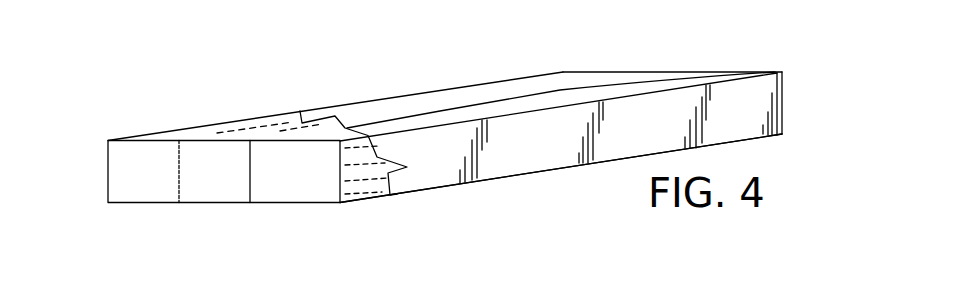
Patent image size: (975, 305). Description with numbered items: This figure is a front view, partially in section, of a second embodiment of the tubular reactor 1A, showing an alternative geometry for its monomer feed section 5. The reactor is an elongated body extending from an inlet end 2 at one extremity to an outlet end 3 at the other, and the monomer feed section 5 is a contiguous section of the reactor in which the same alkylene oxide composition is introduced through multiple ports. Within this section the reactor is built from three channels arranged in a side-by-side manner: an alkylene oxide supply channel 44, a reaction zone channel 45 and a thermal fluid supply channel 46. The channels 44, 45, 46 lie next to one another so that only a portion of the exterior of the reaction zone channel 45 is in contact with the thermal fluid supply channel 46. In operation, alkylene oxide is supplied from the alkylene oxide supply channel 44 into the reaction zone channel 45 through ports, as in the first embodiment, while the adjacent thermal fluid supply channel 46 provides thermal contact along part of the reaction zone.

The tubular reactor 1A is at (175, 117).
The inlet end 2 is at (148, 215).
The outlet end 3 is at (798, 83).
The monomer feed section 5 is at (420, 198).
The alkylene oxide supply channel 44 is at (302, 175).
The reaction zone channel 45 is at (237, 173).
The thermal fluid supply channel 46 is at (135, 175).